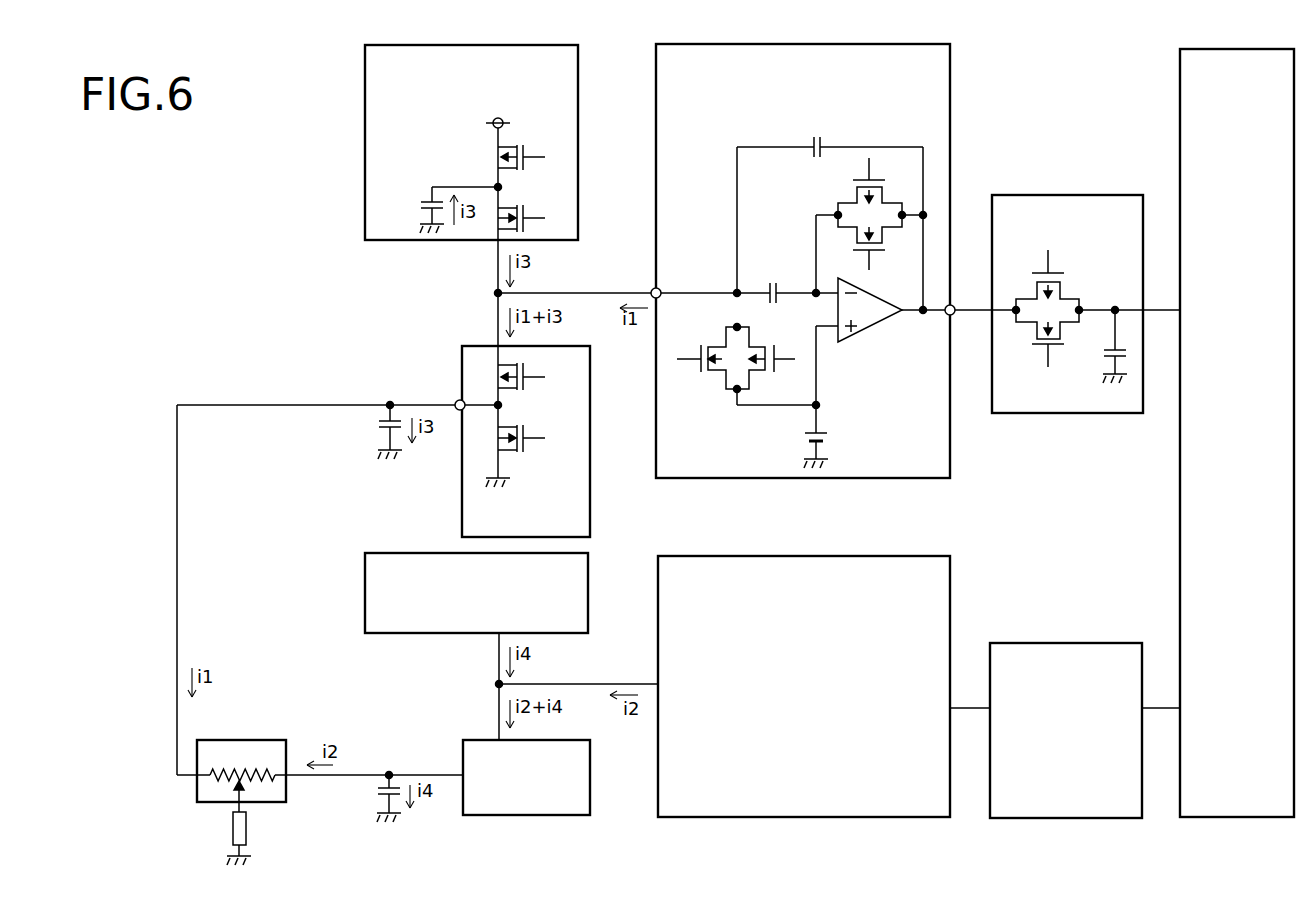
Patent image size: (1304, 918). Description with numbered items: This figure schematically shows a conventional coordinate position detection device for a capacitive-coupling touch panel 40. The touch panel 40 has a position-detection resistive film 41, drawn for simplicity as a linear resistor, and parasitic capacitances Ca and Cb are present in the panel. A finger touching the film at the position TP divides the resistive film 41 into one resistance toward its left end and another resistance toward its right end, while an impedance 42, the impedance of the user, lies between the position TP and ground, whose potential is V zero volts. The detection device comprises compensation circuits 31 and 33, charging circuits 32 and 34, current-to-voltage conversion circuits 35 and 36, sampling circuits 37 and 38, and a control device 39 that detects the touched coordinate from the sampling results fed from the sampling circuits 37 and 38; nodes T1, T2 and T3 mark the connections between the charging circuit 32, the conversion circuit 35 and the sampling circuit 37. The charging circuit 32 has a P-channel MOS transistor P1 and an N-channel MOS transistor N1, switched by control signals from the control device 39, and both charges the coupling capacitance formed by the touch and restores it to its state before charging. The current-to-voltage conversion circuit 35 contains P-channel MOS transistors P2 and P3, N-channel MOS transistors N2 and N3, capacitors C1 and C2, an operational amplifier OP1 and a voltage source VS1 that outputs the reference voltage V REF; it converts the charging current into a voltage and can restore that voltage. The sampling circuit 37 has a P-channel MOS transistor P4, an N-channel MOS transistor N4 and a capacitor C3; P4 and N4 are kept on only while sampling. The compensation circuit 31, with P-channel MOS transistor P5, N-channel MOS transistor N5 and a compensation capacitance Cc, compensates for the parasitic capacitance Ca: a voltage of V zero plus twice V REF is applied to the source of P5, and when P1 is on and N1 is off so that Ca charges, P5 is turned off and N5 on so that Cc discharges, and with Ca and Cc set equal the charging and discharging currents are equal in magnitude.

The compensation circuit 31 is at (444, 142).
The charging circuit 32 is at (499, 438).
The compensation circuit 33 is at (365, 588).
The charging circuit 34 is at (463, 760).
The current-to-voltage conversion circuit 35 is at (830, 261).
The current-to-voltage conversion circuit 36 is at (950, 600).
The sampling circuit 37 is at (1067, 280).
The sampling circuit 38 is at (1068, 643).
The control device 39 is at (1180, 105).
The capacitive-coupling touch panel 40 is at (229, 760).
The position-detection resistive film 41 is at (246, 758).
The impedance 42 is at (246, 828).
The terminal T1 is at (455, 402).
The terminal T2 is at (651, 291).
The terminal T3 is at (953, 316).
The position of touched area TP is at (234, 793).
The capacitor C1 is at (817, 136).
The capacitor C2 is at (773, 282).
The capacitor C3 is at (1104, 362).
The parasitic capacitance Ca is at (380, 432).
The parasitic capacitance Cb is at (378, 796).
The compensation capacitance Cc is at (420, 214).
The operational amplifier OP1 is at (872, 330).
The voltage source VS1 is at (828, 439).
The P-channel MOS transistor P1 is at (527, 388).
The N-channel MOS transistor N1 is at (525, 436).
The P-channel MOS transistor P2 is at (773, 373).
The N-channel MOS transistor N2 is at (703, 373).
The P-channel MOS transistor P3 is at (856, 192).
The N-channel MOS transistor N3 is at (856, 239).
The P-channel MOS transistor P4 is at (1034, 290).
The N-channel MOS transistor N4 is at (1034, 333).
The P-channel MOS transistor P5 is at (527, 168).
The N-channel MOS transistor N5 is at (527, 213).